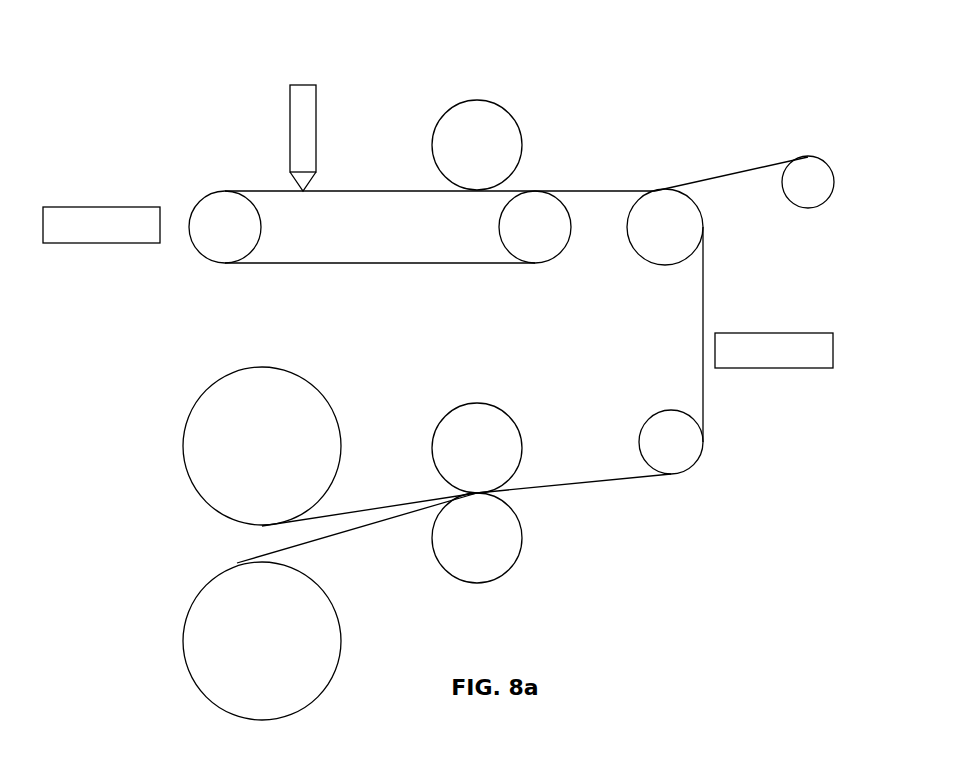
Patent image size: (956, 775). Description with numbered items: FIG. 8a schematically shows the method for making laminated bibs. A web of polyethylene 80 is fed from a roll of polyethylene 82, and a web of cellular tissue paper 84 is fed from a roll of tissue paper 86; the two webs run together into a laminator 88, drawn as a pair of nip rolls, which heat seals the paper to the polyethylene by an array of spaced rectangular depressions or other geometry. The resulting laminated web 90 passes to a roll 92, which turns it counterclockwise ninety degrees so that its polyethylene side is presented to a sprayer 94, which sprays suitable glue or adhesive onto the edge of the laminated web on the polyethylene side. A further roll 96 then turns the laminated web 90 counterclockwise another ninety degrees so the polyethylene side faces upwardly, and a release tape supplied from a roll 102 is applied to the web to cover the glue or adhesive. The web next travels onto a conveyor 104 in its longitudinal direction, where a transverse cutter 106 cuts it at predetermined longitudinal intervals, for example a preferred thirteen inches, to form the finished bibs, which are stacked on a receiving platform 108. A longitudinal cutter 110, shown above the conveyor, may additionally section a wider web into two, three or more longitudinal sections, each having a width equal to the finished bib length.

The web of polyethylene 80 is at (362, 523).
The roll of polyethylene 82 is at (242, 617).
The web of cellular tissue paper 84 is at (378, 505).
The roll of tissue paper 86 is at (245, 435).
The laminator 88 is at (472, 430).
The laminated web 90 is at (615, 480).
The roll 92 is at (688, 450).
The sprayer 94 is at (830, 350).
The roll 96 is at (675, 229).
The roll 102 is at (810, 185).
The conveyor 104 is at (420, 262).
The transverse cutter 106 is at (303, 82).
The receiving platform 108 is at (84, 205).
The longitudinal cutter 110 is at (468, 100).